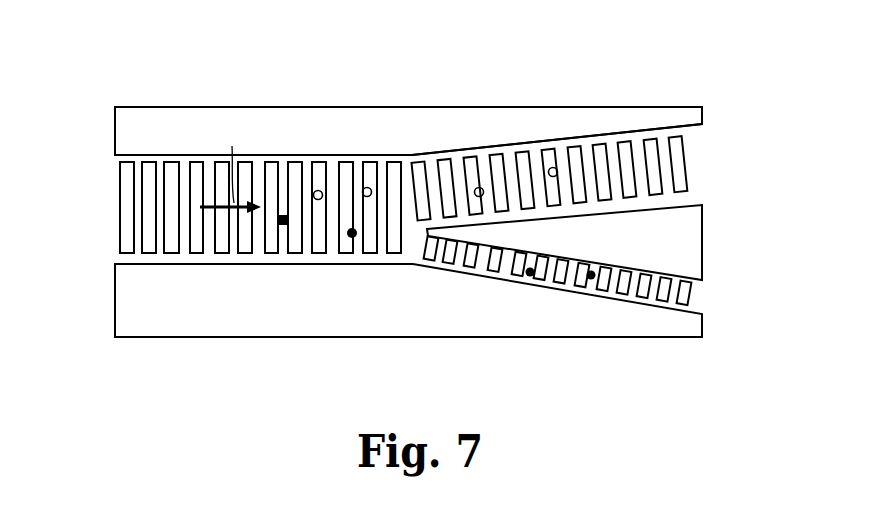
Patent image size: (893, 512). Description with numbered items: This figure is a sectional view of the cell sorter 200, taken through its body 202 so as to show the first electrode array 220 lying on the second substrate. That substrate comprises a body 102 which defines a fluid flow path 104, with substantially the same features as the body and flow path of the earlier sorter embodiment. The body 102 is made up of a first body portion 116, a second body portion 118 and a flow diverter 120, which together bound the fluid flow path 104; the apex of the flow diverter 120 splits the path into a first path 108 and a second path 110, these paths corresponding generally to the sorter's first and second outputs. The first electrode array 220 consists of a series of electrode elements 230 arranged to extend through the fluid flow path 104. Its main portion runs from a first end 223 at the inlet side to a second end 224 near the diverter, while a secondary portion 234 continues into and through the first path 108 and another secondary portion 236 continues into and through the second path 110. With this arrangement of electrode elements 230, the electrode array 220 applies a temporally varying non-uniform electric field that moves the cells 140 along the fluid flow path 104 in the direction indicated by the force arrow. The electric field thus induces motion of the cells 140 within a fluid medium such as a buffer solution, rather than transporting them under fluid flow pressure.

The cell sorter 200 is at (369, 93).
The body 202 is at (237, 107).
The body 102 is at (420, 107).
The second body portion 118 is at (483, 130).
The first body portion 116 is at (500, 327).
The flow diverter 120 is at (693, 232).
The electrode elements 230 is at (120, 190).
The first end 223 is at (120, 200).
The first electrode array 220 is at (106, 225).
The fluid flow path 104 is at (112, 254).
The secondary portion 236 is at (598, 150).
The secondary portion 234 is at (602, 290).
The second path 110 is at (695, 155).
The first path 108 is at (697, 298).
The second end 224 is at (400, 244).
The cells 140 is at (346, 250).